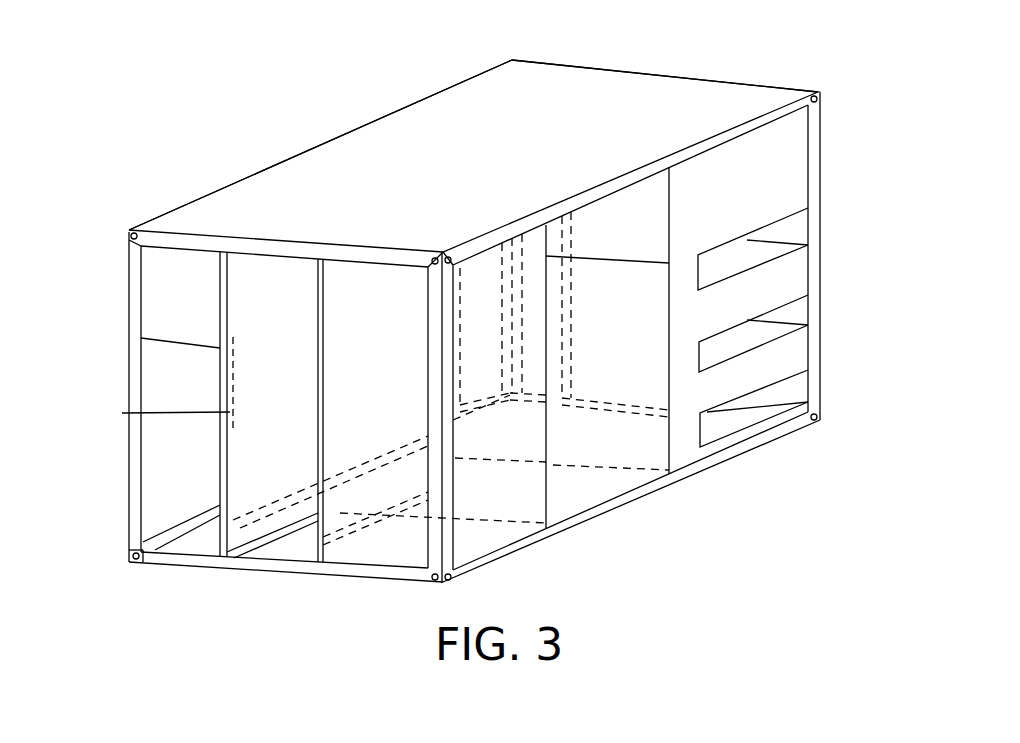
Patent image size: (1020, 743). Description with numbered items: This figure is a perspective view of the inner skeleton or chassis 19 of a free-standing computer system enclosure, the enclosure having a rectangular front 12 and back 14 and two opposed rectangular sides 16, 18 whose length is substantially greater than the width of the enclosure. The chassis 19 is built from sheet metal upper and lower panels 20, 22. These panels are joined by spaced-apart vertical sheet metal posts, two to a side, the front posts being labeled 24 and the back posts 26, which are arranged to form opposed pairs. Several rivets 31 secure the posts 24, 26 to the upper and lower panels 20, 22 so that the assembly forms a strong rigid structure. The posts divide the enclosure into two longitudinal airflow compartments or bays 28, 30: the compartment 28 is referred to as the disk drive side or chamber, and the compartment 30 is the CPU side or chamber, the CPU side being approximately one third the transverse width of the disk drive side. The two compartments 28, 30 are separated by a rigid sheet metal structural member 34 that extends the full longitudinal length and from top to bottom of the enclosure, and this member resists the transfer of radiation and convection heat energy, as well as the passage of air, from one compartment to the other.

The front 12 is at (163, 288).
The back 14 is at (672, 72).
The side 16 is at (238, 178).
The side 18 is at (612, 508).
The chassis 19 is at (343, 128).
The upper panel 20 is at (556, 82).
The lower panel 22 is at (290, 543).
The front post 24 is at (137, 503).
The back post 26 is at (818, 346).
The compartment 28 is at (393, 548).
The compartment 30 is at (185, 498).
The rivet 31 is at (129, 236).
The structural member 34 is at (285, 340).